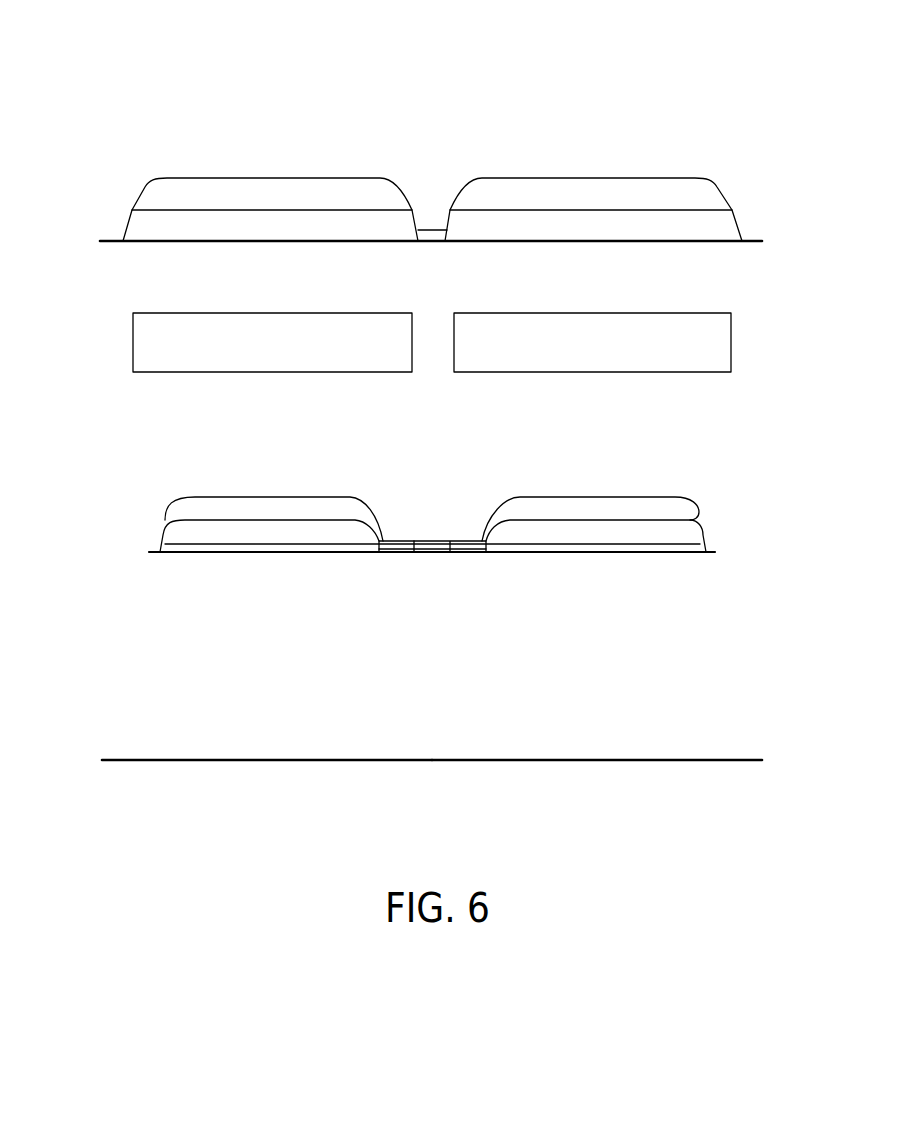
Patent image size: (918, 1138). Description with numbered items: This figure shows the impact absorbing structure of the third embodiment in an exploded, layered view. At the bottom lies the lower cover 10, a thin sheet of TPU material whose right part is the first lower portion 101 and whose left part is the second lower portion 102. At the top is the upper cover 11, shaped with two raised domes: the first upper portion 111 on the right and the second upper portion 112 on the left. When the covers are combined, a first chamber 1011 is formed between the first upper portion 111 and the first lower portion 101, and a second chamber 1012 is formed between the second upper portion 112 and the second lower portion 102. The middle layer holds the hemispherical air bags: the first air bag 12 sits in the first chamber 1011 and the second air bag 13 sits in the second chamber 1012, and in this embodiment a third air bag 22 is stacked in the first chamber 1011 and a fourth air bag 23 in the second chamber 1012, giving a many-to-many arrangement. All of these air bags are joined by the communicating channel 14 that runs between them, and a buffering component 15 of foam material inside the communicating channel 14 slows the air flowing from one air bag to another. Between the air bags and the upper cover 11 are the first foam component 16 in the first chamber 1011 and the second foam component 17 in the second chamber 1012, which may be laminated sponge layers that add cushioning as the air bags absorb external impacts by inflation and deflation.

The lower cover 10 is at (743, 745).
The first lower portion 101 is at (690, 760).
The second lower portion 102 is at (175, 760).
The first chamber 1011 is at (718, 272).
The second chamber 1012 is at (147, 272).
The upper cover 11 is at (769, 170).
The first upper portion 111 is at (703, 186).
The second upper portion 112 is at (163, 186).
The first air bag 12 is at (692, 535).
The second air bag 13 is at (172, 537).
The communicating channel 14 is at (458, 543).
The buffering component 15 is at (429, 540).
The first foam component 16 is at (713, 368).
The second foam component 17 is at (150, 368).
The third air bag 22 is at (668, 498).
The fourth air bag 23 is at (193, 498).